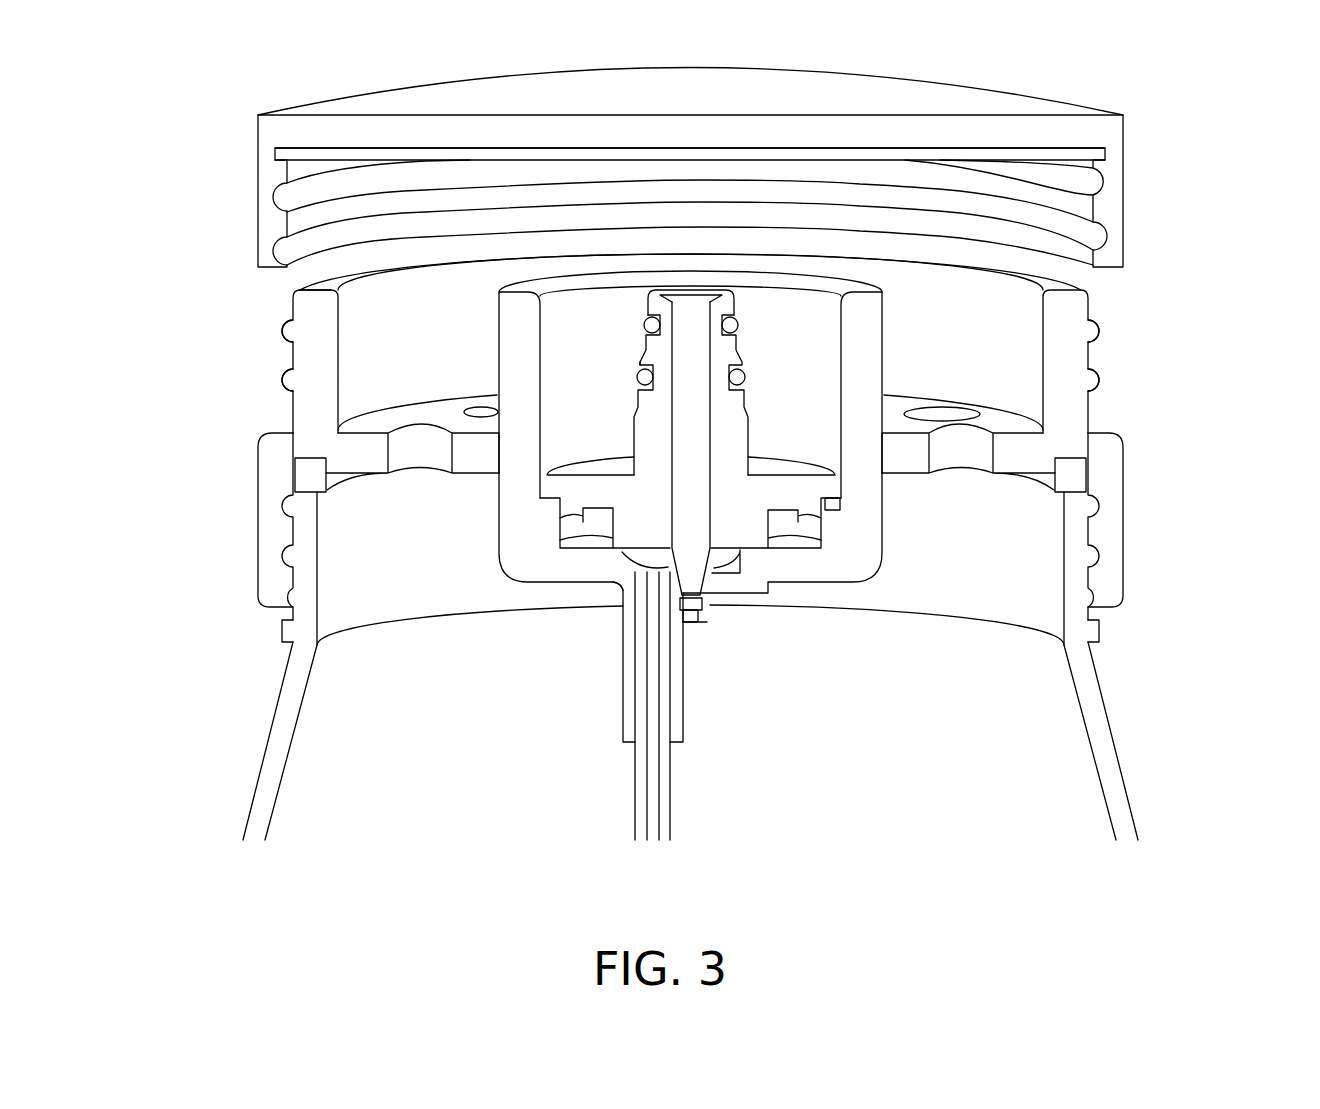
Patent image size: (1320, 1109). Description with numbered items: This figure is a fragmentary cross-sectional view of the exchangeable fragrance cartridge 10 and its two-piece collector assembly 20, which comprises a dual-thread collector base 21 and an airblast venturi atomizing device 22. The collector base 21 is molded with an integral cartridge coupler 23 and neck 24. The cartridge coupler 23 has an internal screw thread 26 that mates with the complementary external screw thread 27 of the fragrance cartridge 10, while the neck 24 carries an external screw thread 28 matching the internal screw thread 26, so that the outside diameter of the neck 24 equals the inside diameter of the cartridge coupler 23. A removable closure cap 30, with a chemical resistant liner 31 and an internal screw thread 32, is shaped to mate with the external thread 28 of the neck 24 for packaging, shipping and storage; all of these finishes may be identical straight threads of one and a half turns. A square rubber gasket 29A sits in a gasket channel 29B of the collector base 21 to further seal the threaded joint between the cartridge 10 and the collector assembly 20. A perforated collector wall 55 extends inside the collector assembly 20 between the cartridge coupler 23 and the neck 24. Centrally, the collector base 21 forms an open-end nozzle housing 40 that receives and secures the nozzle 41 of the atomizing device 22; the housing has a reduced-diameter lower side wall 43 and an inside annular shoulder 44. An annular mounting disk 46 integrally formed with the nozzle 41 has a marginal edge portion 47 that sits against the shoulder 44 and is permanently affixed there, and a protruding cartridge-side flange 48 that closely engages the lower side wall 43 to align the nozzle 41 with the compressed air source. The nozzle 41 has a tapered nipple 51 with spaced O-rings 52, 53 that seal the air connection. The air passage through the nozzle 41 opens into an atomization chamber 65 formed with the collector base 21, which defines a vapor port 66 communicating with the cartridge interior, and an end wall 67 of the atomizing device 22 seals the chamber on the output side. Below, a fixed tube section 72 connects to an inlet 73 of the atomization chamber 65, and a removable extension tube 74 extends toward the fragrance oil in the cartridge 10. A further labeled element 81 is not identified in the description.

The fragrance cartridge 10 is at (1178, 696).
The collector assembly 20 is at (1132, 346).
The collector base 21 is at (1110, 432).
The airblast venturi atomizing device 22 is at (622, 423).
The cartridge coupler 23 is at (253, 488).
The neck 24 is at (293, 300).
The internal screw thread 26 is at (288, 553).
The external screw thread 27 is at (287, 585).
The external screw thread 28 is at (286, 330).
The square rubber gasket 29A is at (307, 475).
The gasket channel 29B is at (1070, 455).
The removable closure cap 30 is at (257, 139).
The chemical resistant liner 31 is at (284, 176).
The internal screw thread 32 is at (1090, 235).
The nozzle housing 40 is at (855, 276).
The nozzle 41 is at (752, 425).
The lower side wall 43 is at (560, 533).
The inside annular shoulder 44 is at (558, 500).
The annular mounting disk 46 is at (790, 467).
The marginal edge portion 47 is at (843, 508).
The cartridge-side flange 48 is at (807, 512).
The tapered nipple 51 is at (745, 350).
The O-ring 52 is at (644, 322).
The O-ring 53 is at (638, 377).
The perforated collector wall 55 is at (445, 410).
The atomization chamber 65 is at (708, 598).
The vapor port 66 is at (695, 625).
The end wall 67 is at (733, 550).
The fixed tube section 72 is at (623, 698).
The inlet 73 is at (625, 558).
The removable extension tube 74 is at (673, 770).
The valve retainer 81 is at (705, 622).